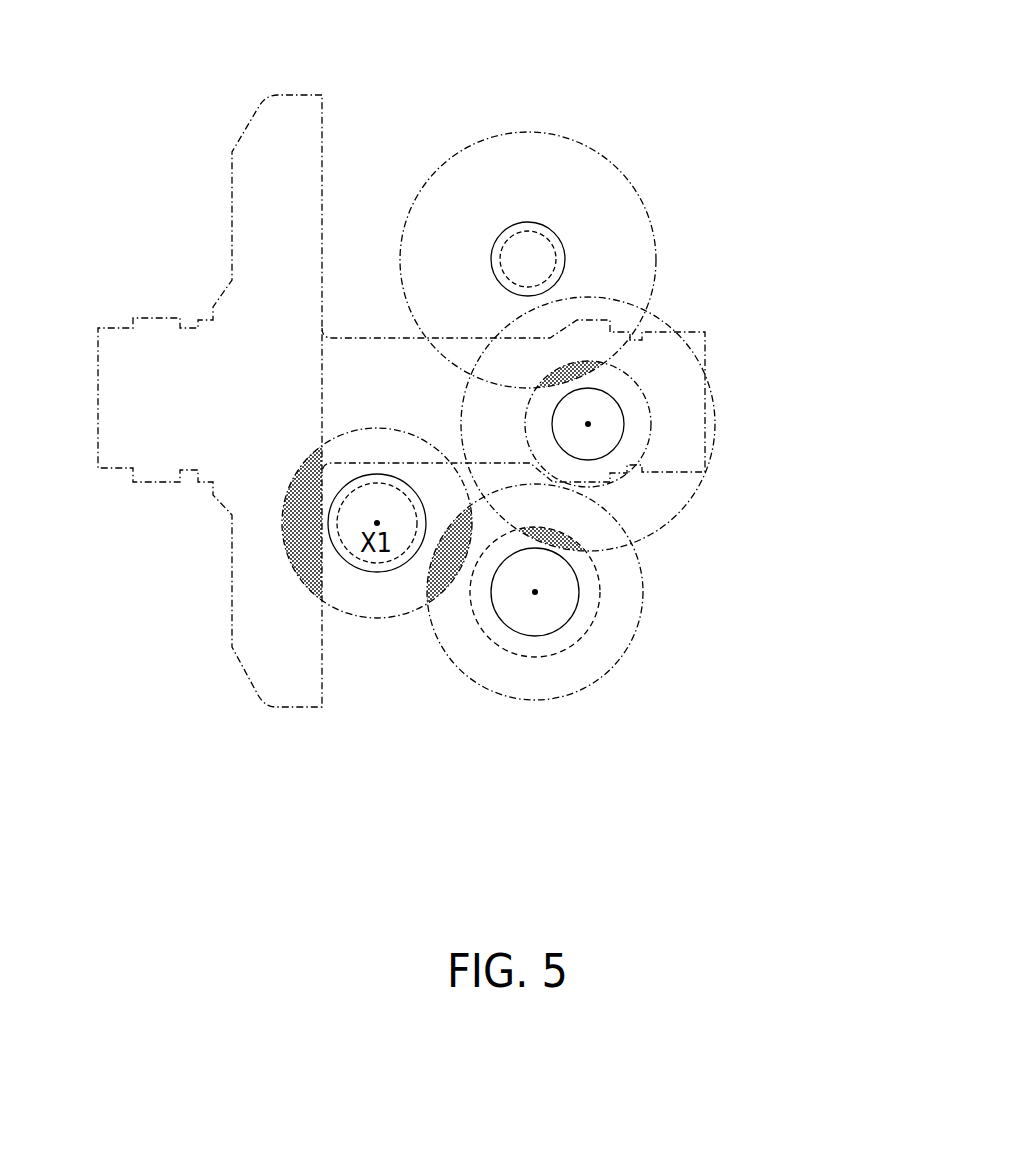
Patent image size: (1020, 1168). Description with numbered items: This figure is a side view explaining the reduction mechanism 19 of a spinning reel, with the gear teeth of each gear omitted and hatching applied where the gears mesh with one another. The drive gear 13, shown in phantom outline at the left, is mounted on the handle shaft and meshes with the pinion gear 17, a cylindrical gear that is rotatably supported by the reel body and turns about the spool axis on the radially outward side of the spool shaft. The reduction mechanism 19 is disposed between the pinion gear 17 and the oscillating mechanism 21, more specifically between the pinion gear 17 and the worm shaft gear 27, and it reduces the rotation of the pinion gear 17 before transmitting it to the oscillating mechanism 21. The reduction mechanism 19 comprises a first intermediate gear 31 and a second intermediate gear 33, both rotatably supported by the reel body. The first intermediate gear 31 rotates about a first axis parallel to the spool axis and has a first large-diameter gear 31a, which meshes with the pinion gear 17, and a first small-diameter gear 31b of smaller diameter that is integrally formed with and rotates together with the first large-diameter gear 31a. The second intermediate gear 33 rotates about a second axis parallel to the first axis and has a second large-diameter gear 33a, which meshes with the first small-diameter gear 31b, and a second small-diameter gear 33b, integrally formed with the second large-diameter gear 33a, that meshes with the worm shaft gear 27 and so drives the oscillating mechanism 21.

The drive gear 13 is at (280, 145).
The pinion gear 17 is at (293, 581).
The reduction mechanism 19 is at (700, 608).
The worm shaft gear 27 is at (560, 205).
The oscillating mechanism 21 is at (596, 130).
The first intermediate gear 31 is at (556, 641).
The first large-diameter gear 31a is at (538, 677).
The first small-diameter gear 31b is at (503, 633).
The second intermediate gear 33 is at (643, 398).
The second large-diameter gear 33a is at (682, 488).
The second small-diameter gear 33b is at (625, 398).